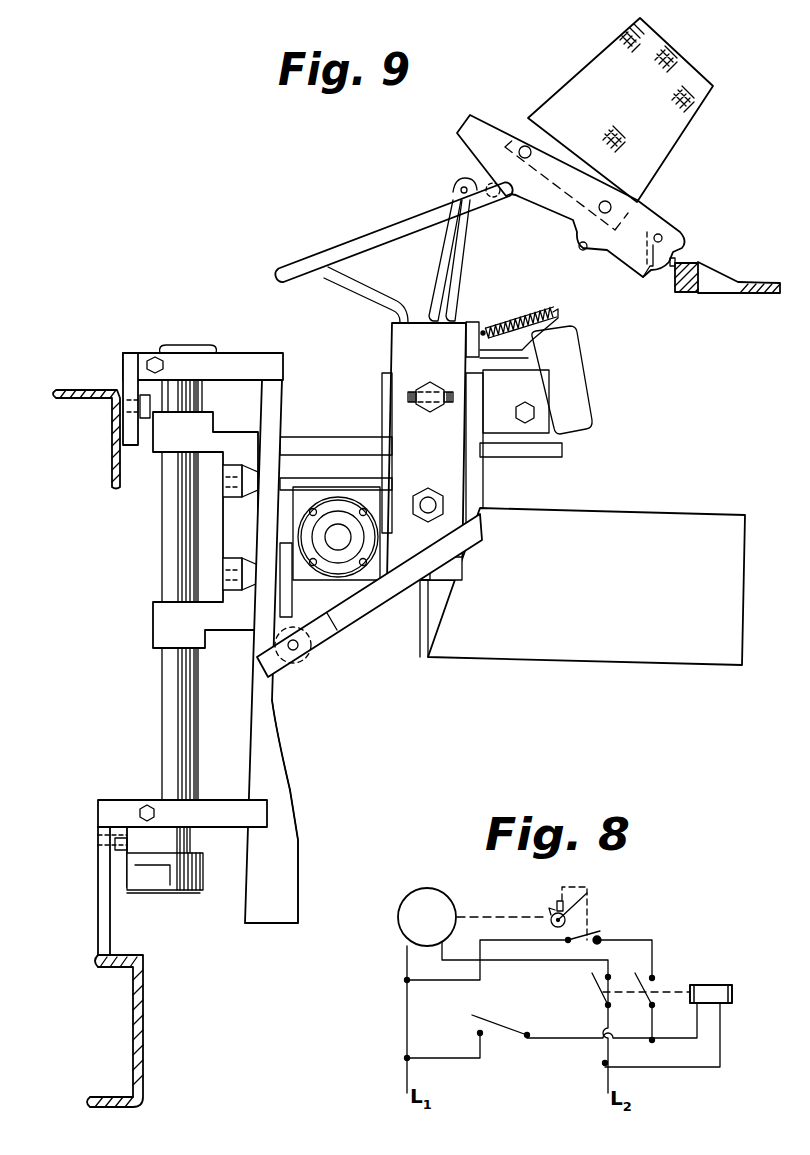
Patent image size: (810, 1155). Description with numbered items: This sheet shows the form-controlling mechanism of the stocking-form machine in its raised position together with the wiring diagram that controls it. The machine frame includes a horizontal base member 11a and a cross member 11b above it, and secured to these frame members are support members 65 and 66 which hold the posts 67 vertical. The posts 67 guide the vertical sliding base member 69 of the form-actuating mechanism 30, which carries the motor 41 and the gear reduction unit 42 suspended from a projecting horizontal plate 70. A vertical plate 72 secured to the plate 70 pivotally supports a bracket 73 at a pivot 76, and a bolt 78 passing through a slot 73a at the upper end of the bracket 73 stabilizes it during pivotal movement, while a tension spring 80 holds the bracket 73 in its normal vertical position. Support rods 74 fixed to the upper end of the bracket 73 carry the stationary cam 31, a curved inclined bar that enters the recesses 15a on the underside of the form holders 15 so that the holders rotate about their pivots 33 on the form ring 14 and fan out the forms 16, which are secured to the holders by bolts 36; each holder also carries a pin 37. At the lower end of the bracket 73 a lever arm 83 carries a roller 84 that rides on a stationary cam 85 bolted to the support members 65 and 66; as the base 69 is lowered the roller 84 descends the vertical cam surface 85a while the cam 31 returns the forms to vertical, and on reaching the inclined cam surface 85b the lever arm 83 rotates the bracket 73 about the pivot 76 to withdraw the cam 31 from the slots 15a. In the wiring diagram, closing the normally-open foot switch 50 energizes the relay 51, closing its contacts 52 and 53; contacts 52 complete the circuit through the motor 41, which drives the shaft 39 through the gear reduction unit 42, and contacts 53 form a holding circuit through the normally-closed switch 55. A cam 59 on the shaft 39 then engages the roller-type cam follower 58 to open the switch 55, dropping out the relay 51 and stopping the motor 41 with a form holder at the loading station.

In FIG. 9, the horizontal base member 11a is at (144, 1056).
In FIG. 9, the cross member 11b is at (76, 402).
In FIG. 9, the form ring 14 is at (680, 292).
In FIG. 9, the form holder 15 is at (470, 126).
In FIG. 9, the recess 15a is at (502, 176).
In FIG. 9, the form 16 is at (668, 121).
In FIG. 9, the form-actuating mechanism 30 is at (277, 240).
In FIG. 9, the stationary cam 31 is at (375, 240).
In FIG. 9, the pivot 33 is at (664, 239).
In FIG. 9, the bolt 36 is at (522, 146).
In FIG. 9, the pin 37 is at (584, 251).
In FIG. 9, the motor 41 is at (670, 660).
In FIG. 8, the motor 41 is at (412, 931).
In FIG. 9, the gear reduction unit 42 is at (388, 620).
In FIG. 9, the support member 65 is at (118, 869).
In FIG. 9, the support member 66 is at (130, 369).
In FIG. 9, the post 67 is at (178, 748).
In FIG. 9, the sliding base member 69 is at (246, 541).
In FIG. 9, the horizontal plate 70 is at (565, 451).
In FIG. 9, the vertical plate 72 is at (470, 469).
In FIG. 9, the bracket 73 is at (400, 338).
In FIG. 9, the slot 73a is at (408, 398).
In FIG. 9, the support rod 74 is at (458, 246).
In FIG. 9, the pivot 76 is at (440, 505).
In FIG. 9, the bolt 78 is at (421, 392).
In FIG. 9, the tension spring 80 is at (534, 323).
In FIG. 9, the lever arm 83 is at (352, 610).
In FIG. 9, the roller 84 is at (300, 664).
In FIG. 9, the cam 85 is at (258, 711).
In FIG. 9, the vertical cam surface 85a is at (280, 698).
In FIG. 9, the inclined cam surface 85b is at (296, 776).
In FIG. 8, the shaft 39 is at (587, 893).
In FIG. 8, the switch 50 is at (497, 1025).
In FIG. 8, the relay 51 is at (713, 985).
In FIG. 8, the contact 52 is at (590, 978).
In FIG. 8, the contact 53 is at (645, 984).
In FIG. 8, the switch 55 is at (598, 936).
In FIG. 8, the cam follower 58 is at (557, 904).
In FIG. 8, the cam 59 is at (550, 912).